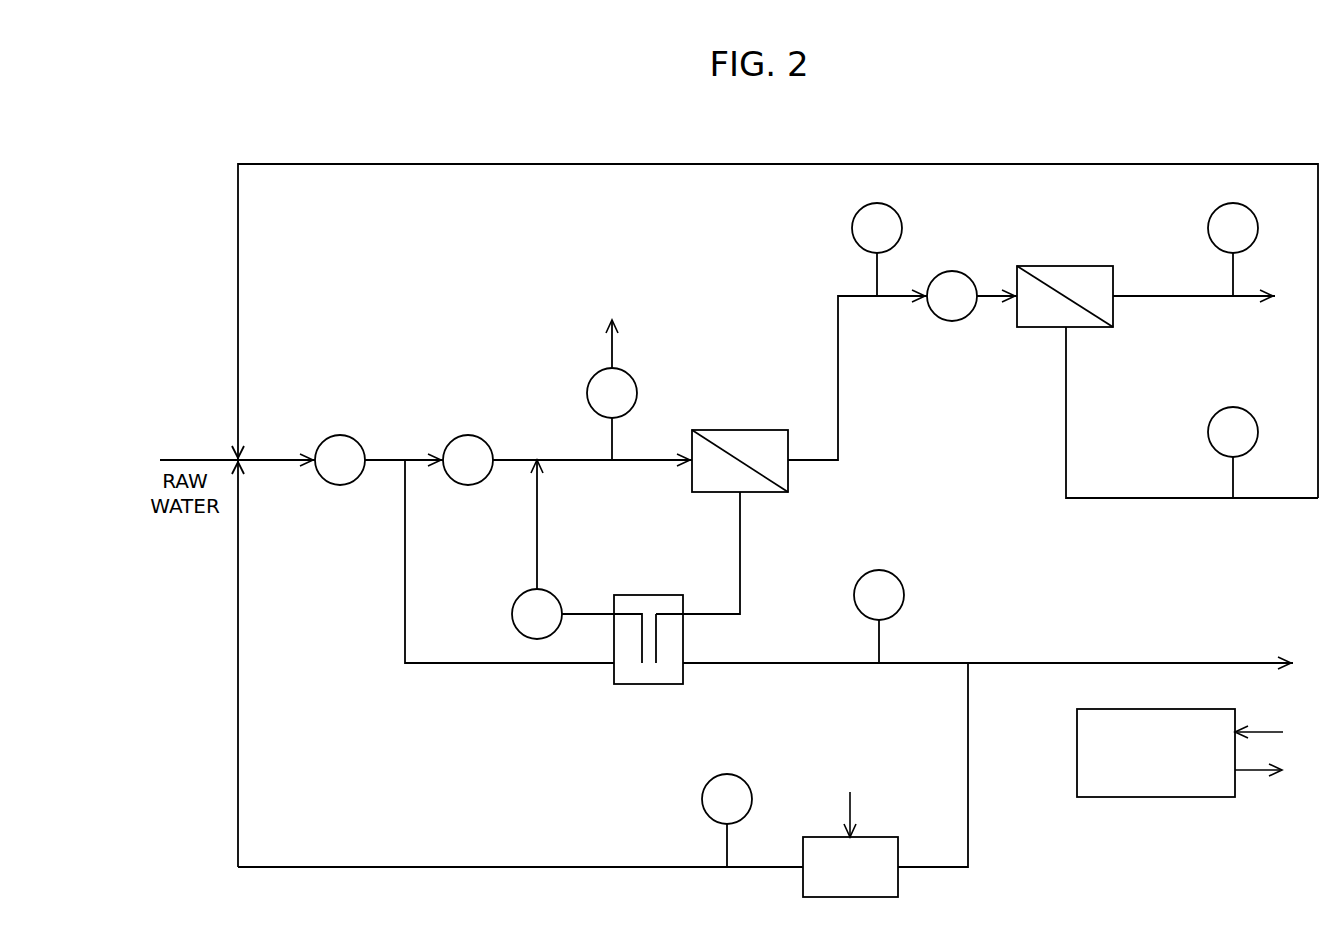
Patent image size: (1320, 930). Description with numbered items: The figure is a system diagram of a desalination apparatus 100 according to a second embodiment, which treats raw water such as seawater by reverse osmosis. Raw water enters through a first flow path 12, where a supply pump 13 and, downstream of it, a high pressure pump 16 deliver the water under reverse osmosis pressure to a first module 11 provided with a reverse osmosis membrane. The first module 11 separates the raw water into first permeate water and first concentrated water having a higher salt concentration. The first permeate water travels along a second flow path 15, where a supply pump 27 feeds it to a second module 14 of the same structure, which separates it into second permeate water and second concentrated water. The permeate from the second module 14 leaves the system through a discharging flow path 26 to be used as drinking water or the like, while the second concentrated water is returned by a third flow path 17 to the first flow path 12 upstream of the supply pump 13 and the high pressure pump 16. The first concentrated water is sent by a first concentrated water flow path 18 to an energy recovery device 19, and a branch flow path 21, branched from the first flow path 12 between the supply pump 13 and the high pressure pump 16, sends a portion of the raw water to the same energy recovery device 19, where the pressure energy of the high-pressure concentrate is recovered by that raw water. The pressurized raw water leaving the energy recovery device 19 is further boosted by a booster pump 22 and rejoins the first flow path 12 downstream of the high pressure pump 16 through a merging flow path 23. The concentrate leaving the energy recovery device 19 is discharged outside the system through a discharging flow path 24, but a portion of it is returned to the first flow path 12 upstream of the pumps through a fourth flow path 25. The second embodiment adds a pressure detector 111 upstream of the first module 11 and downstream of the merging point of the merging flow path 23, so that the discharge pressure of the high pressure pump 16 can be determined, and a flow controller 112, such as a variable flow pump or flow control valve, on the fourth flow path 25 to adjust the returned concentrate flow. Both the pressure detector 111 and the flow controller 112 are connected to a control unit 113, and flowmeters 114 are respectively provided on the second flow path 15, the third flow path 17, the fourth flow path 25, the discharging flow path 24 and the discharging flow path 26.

The desalination apparatus 100 is at (1158, 123).
The first flow path 12 is at (277, 458).
The supply pump 13 is at (340, 486).
The high pressure pump 16 is at (468, 486).
The pressure detector 111 is at (587, 394).
The first module 11 is at (730, 432).
The second flow path 15 is at (838, 385).
The supply pump 27 is at (952, 322).
The second module 14 is at (1055, 266).
The discharging flow path 26 is at (1160, 298).
The third flow path 17 is at (1155, 500).
The first concentrated water flow path 18 is at (740, 552).
The energy recovery device 19 is at (650, 595).
The booster pump 22 is at (512, 616).
The merging flow path 23 is at (537, 525).
The branch flow path 21 is at (490, 665).
The discharging flow path 24 is at (1106, 661).
The fourth flow path 25 is at (482, 866).
The flow controller 112 is at (878, 837).
The control unit 113 is at (1076, 751).
The flowmeter 114 is at (902, 228).